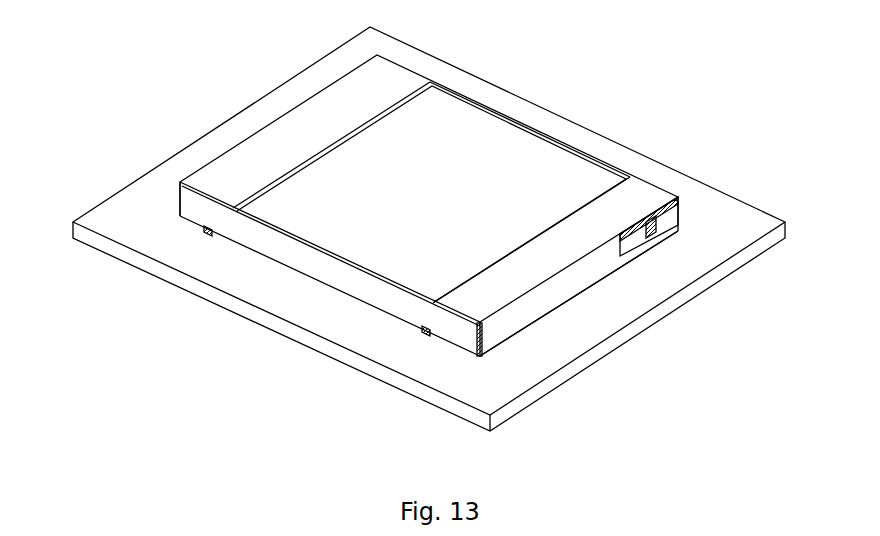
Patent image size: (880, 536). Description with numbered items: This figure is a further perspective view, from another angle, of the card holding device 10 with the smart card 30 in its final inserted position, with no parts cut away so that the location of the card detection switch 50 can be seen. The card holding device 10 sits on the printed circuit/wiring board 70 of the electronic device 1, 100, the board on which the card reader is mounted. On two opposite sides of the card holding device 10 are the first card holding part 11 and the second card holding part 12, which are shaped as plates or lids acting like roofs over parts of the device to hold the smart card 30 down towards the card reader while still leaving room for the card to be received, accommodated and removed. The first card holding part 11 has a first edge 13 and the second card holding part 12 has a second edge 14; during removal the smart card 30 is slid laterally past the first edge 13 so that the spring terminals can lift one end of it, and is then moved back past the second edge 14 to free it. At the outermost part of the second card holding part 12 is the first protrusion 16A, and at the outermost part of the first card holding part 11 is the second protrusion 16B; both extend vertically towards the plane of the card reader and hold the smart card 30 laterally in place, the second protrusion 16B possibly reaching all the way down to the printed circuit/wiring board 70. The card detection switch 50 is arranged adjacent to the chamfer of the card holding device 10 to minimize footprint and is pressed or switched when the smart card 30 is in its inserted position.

The electronic device 1 is at (429, 229).
The printed circuit/wiring board 70 is at (429, 229).
The electronic device 100 is at (333, 352).
The card holding device 10 is at (434, 201).
The first card holding part 11 is at (622, 197).
The second card holding part 12 is at (377, 88).
The first edge of the first card holding part 13 is at (587, 205).
The second edge of the second card holding part 14 is at (280, 177).
The first protrusion at the second card holding part 16A is at (214, 148).
The second protrusion at the first card holding part 16B is at (507, 327).
The smart card 30 is at (487, 147).
The card detection switch 50 is at (650, 230).